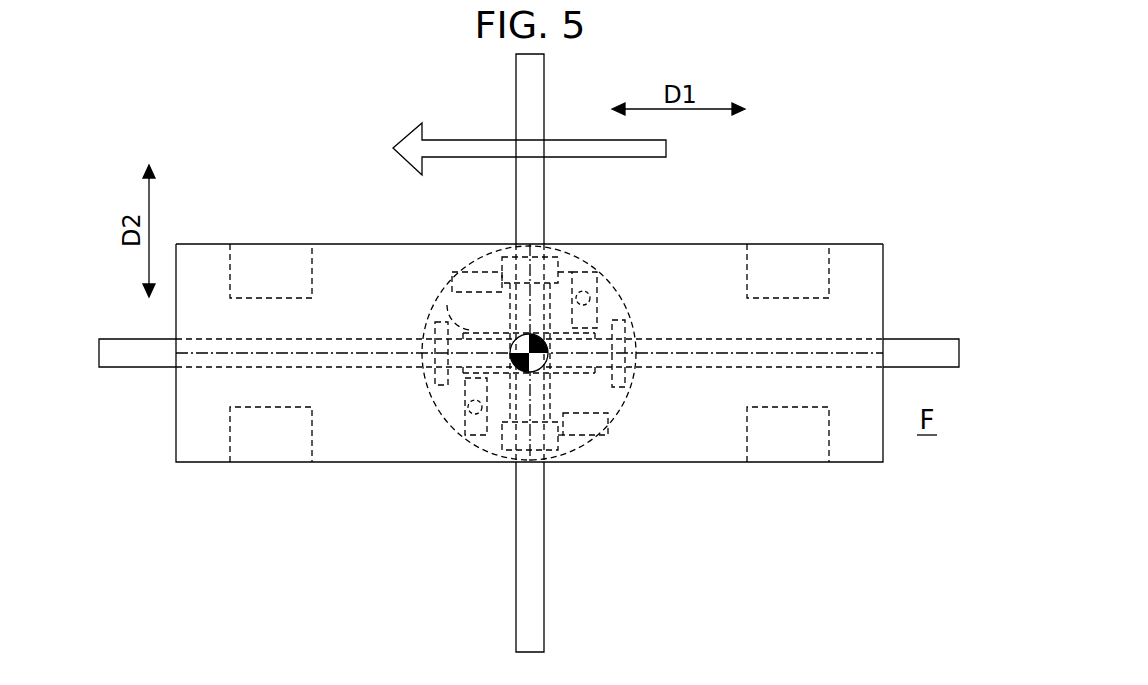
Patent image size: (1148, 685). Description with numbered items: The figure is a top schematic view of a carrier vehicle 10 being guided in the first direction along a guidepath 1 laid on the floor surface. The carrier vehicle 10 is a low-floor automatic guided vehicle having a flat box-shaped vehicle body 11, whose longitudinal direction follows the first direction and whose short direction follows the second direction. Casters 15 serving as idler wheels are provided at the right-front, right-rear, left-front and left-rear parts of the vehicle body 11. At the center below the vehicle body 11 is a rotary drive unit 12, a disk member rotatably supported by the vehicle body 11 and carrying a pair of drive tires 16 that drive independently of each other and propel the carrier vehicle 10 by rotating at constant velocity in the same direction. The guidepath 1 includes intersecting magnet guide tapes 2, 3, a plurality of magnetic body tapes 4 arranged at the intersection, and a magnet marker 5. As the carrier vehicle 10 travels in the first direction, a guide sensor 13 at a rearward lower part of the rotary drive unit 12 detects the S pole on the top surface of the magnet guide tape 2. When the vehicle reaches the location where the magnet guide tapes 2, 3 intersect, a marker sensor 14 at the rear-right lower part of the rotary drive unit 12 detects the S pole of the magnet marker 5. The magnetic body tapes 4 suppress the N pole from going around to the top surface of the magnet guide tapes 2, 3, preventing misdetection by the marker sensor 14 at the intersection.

The guidepath 1 is at (878, 165).
The magnet guide tape 2 is at (922, 348).
The magnet guide tape 3 is at (538, 66).
The magnetic body tape 4 is at (433, 305).
The magnet marker 5 is at (478, 243).
The carrier vehicle 10 is at (686, 232).
The vehicle body 11 is at (630, 243).
The rotary drive unit 12 is at (620, 412).
The guide sensor 13 is at (435, 385).
The marker sensor 14 is at (470, 410).
The caster 15 is at (270, 243).
The drive tire 16 is at (548, 245).